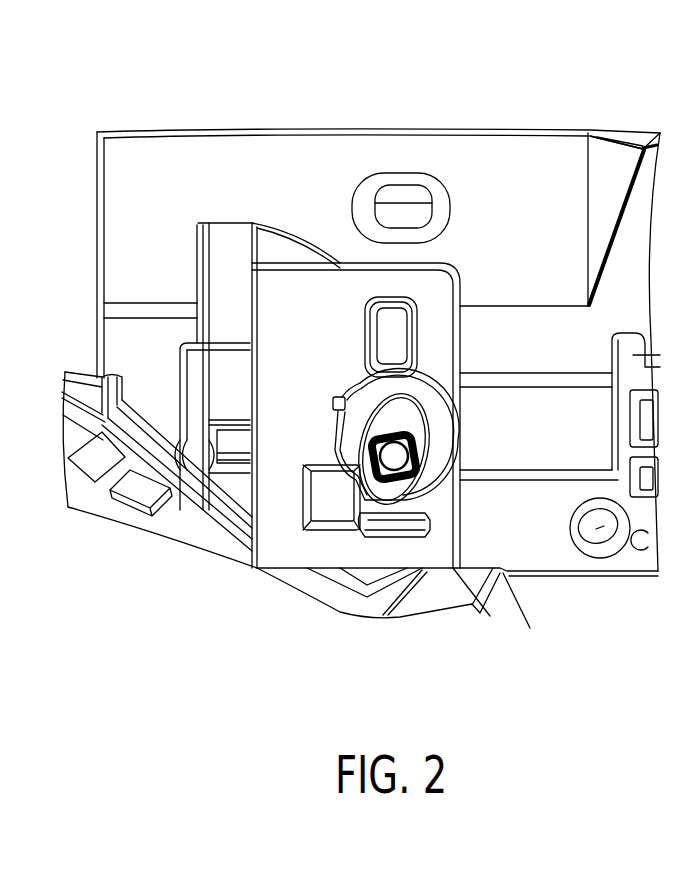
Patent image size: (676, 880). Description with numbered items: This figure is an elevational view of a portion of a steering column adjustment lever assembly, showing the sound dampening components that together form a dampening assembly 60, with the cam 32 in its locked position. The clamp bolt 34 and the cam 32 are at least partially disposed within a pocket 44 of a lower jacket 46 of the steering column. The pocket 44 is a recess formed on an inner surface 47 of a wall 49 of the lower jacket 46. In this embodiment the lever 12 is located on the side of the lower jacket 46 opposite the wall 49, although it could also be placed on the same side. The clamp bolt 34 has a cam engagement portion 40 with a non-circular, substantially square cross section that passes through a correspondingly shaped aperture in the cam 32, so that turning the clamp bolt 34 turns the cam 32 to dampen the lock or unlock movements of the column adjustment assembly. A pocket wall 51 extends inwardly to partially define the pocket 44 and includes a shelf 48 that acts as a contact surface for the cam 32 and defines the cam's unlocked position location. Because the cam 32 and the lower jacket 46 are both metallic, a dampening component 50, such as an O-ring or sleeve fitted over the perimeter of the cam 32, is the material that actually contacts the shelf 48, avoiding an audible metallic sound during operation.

The lever 12 is at (130, 512).
The cam 32 is at (395, 508).
The clamp bolt 34 is at (398, 485).
The cam engagement portion 40 is at (396, 455).
The pocket 44 is at (434, 392).
The lower jacket 46 is at (548, 168).
The inner surface 47 is at (285, 358).
The shelf 48 is at (337, 467).
The wall 49 is at (287, 433).
The dampening component 50 is at (432, 522).
The pocket wall 51 is at (342, 394).
The dampening assembly 60 is at (360, 352).